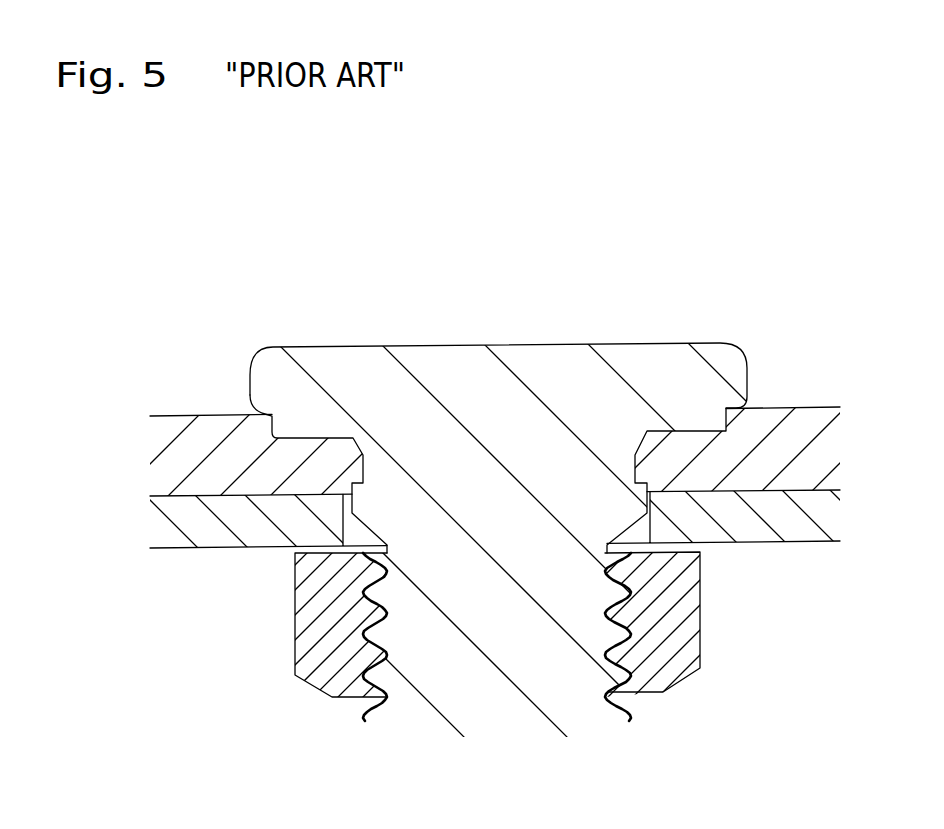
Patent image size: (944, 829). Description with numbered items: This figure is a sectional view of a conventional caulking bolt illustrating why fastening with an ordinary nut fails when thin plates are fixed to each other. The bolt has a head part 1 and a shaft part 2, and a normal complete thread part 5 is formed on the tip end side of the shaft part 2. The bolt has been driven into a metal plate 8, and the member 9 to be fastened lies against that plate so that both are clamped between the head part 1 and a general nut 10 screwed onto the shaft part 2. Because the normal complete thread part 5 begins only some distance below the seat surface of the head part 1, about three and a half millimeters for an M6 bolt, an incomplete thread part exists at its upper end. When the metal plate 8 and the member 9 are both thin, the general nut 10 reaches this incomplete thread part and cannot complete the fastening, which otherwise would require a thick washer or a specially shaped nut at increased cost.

The head part 1 is at (500, 343).
The shaft part 2 is at (582, 698).
The normal complete thread part 5 is at (365, 586).
The metal plate 8 is at (803, 408).
The member to be fastened 9 is at (803, 541).
The general nut 10 is at (300, 668).